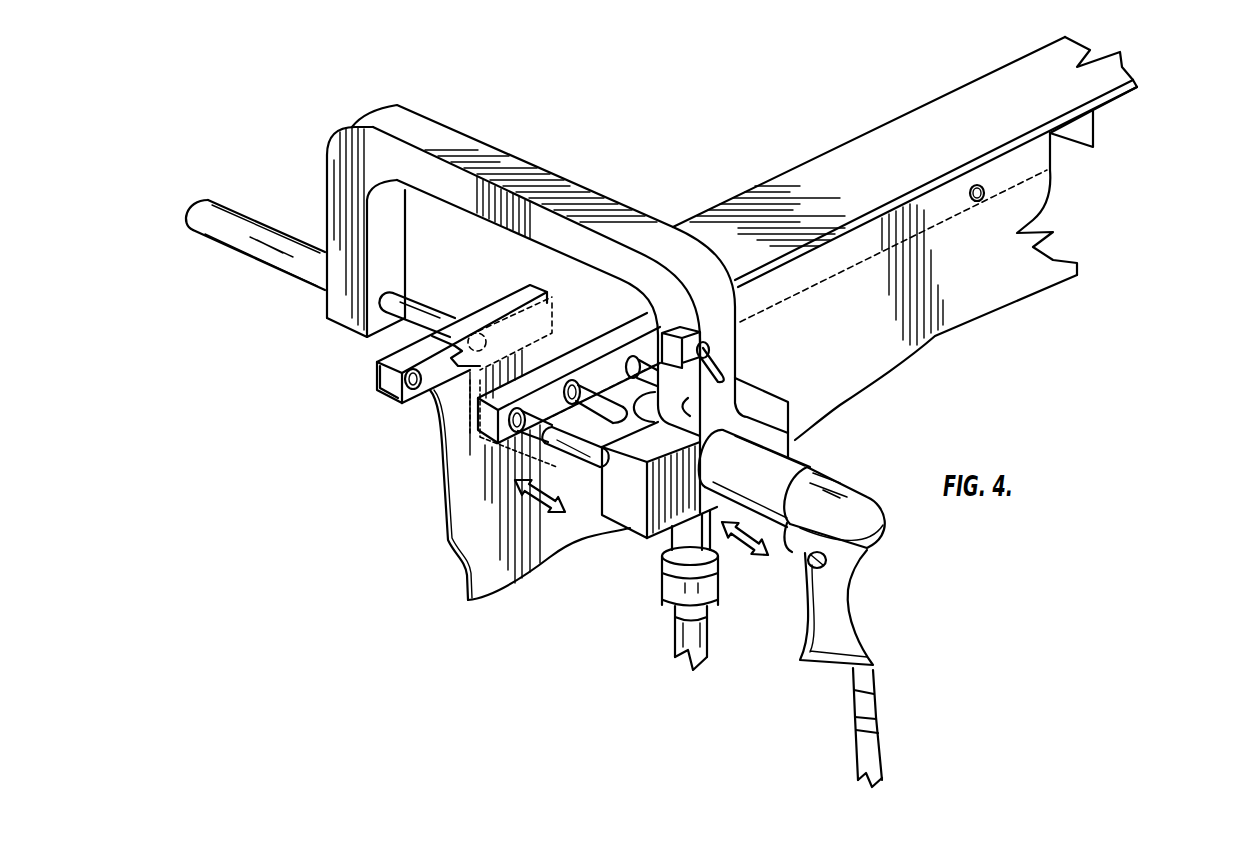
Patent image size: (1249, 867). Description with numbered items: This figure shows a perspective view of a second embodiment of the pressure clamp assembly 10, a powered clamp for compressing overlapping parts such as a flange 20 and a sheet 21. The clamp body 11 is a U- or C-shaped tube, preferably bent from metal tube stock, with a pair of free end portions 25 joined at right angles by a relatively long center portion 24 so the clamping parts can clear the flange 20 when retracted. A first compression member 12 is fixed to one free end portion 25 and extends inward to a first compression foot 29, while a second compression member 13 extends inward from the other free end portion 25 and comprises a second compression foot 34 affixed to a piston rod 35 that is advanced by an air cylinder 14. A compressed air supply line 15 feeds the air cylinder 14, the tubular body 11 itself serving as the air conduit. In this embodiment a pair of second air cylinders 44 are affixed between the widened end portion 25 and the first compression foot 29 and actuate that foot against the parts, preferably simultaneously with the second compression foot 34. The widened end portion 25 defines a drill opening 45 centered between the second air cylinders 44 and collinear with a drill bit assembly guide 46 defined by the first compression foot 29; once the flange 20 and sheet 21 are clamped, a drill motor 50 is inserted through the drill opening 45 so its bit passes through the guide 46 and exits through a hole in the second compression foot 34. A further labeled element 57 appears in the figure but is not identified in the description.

The pressure clamp assembly 10 is at (604, 137).
The clamp body 11 is at (625, 220).
The first compression member 12 is at (480, 428).
The second compression member 13 is at (387, 387).
The air cylinder 14 is at (205, 223).
The compressed air supply line 15 is at (710, 640).
The flange 20 is at (1097, 86).
The sheet 21 is at (1060, 270).
The center portion 24 is at (480, 160).
The free end portions 25 is at (330, 232).
The first compression foot 29 is at (569, 381).
The second compression foot 34 is at (398, 354).
The piston rod 35 is at (420, 315).
The second air cylinders 44 is at (742, 321).
The drill opening 45 is at (740, 426).
The drill bit assembly guide 46 is at (612, 398).
The drill motor 50 is at (870, 537).
The locking pin 57 is at (600, 412).